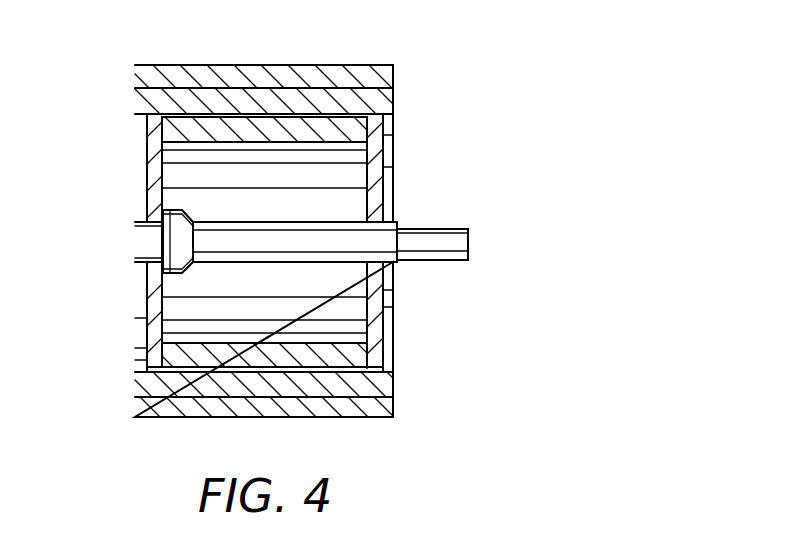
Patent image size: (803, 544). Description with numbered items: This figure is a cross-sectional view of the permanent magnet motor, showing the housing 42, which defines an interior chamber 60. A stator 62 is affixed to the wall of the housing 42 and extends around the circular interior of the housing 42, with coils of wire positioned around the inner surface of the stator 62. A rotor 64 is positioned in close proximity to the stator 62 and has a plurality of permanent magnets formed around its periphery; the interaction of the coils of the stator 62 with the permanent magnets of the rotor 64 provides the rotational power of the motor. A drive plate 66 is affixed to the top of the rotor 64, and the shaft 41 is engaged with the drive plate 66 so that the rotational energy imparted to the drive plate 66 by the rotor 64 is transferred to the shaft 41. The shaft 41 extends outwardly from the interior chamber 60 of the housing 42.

The shaft 41 is at (353, 248).
The housing 42 is at (377, 78).
The interior chamber 60 is at (173, 310).
The stator 62 is at (377, 105).
The rotor 64 is at (178, 350).
The drive plate 66 is at (153, 175).